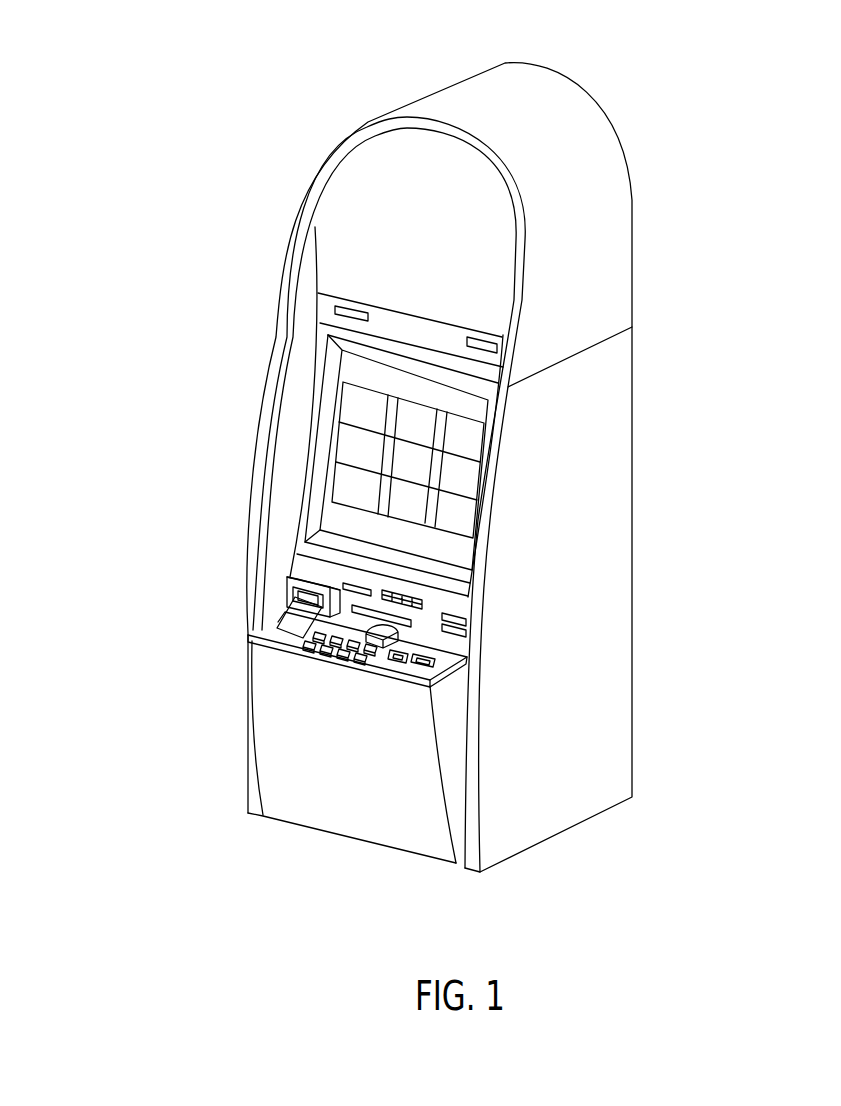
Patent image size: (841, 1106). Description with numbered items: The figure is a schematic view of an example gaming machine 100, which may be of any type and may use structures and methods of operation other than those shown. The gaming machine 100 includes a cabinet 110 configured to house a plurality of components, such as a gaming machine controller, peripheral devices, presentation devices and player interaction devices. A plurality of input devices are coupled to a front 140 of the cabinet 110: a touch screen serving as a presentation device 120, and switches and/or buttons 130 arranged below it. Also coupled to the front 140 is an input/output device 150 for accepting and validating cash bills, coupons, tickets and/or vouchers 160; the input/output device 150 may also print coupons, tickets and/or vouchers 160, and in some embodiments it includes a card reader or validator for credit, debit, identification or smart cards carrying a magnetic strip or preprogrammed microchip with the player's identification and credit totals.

The gaming machine 100 is at (645, 58).
The cabinet 110 is at (570, 123).
The presentation device 120 is at (462, 516).
The switches and/or buttons 130 is at (318, 645).
The front 140 is at (327, 305).
The input/output (I/O) device 150 is at (290, 577).
The vouchers 160 is at (295, 610).